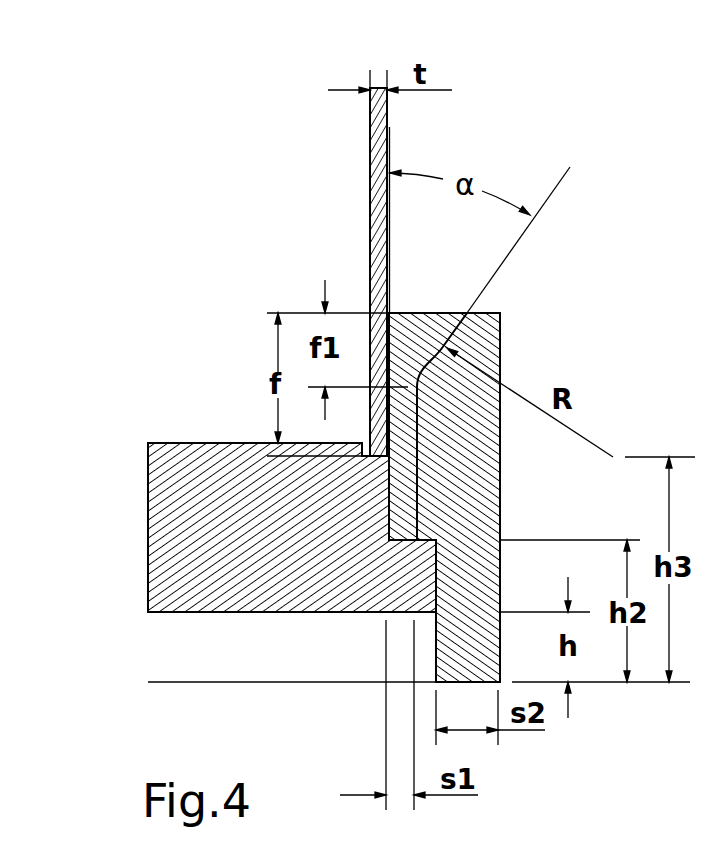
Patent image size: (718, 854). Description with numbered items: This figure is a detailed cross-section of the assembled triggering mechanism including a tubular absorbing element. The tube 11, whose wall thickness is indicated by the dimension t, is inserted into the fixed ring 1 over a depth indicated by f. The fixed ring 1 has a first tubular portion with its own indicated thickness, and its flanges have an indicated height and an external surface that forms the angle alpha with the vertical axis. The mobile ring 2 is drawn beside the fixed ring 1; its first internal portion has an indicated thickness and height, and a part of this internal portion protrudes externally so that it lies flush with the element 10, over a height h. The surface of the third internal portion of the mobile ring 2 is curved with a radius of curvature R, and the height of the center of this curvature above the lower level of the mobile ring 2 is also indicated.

The fixed ring 1 is at (410, 340).
The mobile ring 2 is at (472, 435).
The element 10 is at (167, 516).
The tube 11 is at (380, 212).